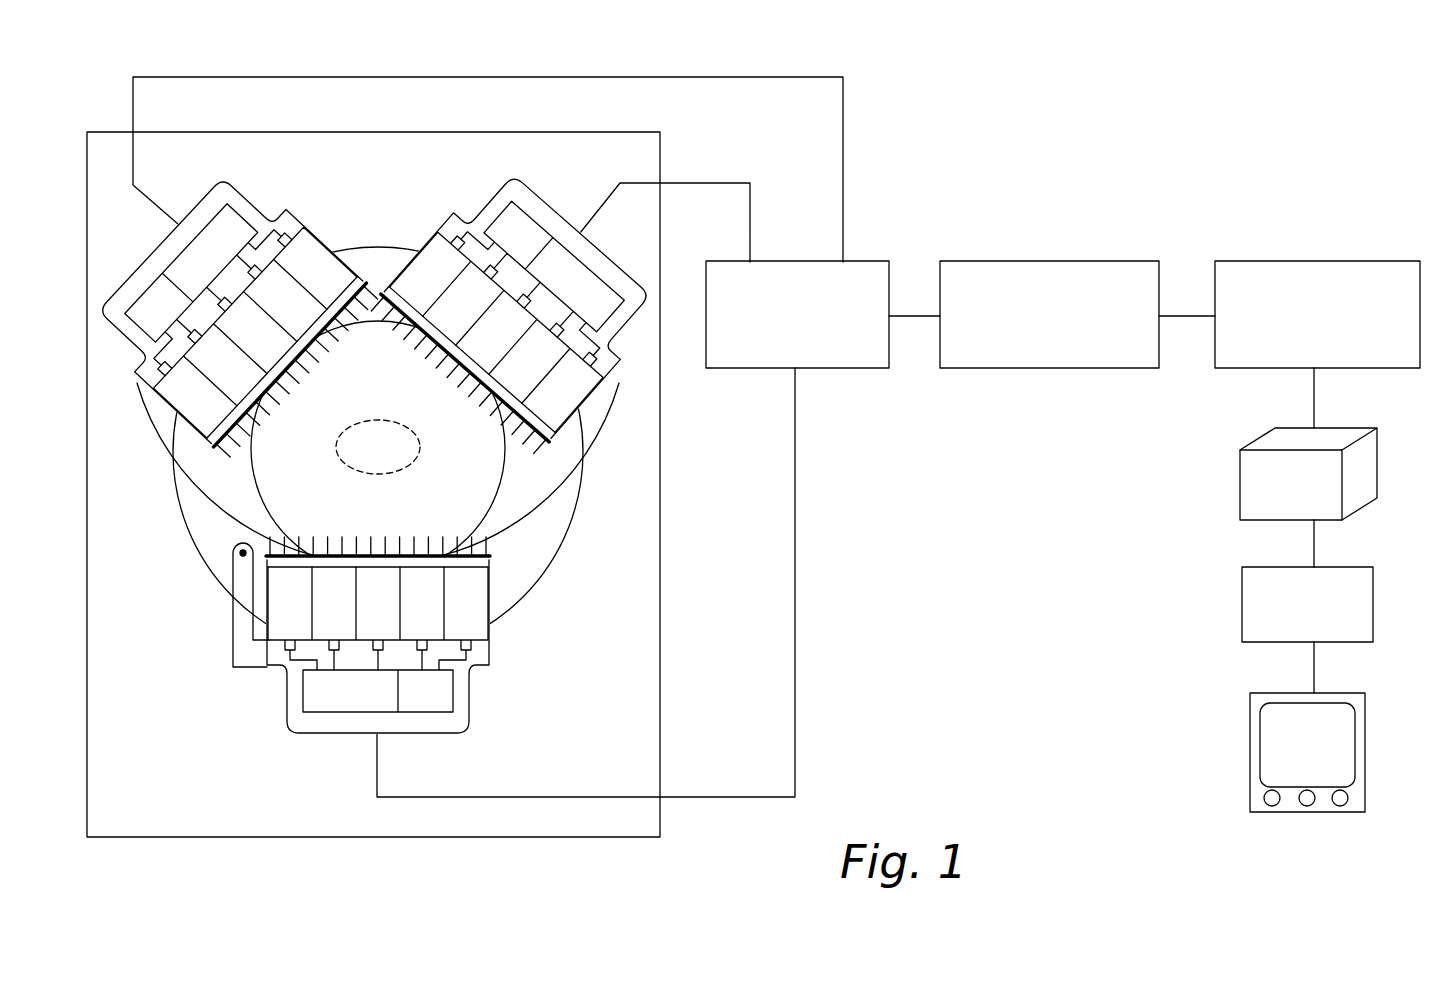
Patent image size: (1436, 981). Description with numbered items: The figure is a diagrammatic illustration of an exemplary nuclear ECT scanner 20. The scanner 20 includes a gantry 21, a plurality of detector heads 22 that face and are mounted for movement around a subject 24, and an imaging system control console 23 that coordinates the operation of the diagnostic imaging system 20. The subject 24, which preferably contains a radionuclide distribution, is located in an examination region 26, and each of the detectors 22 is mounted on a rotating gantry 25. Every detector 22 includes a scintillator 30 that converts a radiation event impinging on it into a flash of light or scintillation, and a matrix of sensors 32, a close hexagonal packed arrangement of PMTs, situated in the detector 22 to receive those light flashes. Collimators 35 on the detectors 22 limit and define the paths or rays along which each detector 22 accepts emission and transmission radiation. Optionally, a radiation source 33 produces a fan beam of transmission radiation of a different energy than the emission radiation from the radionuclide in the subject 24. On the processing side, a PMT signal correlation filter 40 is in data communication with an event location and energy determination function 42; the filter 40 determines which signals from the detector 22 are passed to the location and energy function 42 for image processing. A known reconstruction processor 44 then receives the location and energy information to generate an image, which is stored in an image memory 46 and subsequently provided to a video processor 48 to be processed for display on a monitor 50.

The nuclear ECT scanner 20 is at (914, 127).
The gantry 21 is at (394, 132).
The detector heads 22 is at (240, 201).
The imaging system control console 23 is at (1162, 144).
The subject 24 is at (366, 460).
The rotating gantry 25 is at (577, 607).
The examination region 26 is at (305, 492).
The scintillator 30 is at (223, 438).
The matrix of sensors 32 is at (423, 267).
The radiation source 33 is at (236, 549).
The collimators 35 is at (430, 347).
The PMT signal correlation filter 40 is at (864, 368).
The event location and energy determination function 42 is at (1063, 261).
The reconstruction processor 44 is at (1354, 261).
The image memory 46 is at (1238, 482).
The video processor 48 is at (1240, 605).
The monitor 50 is at (1250, 752).